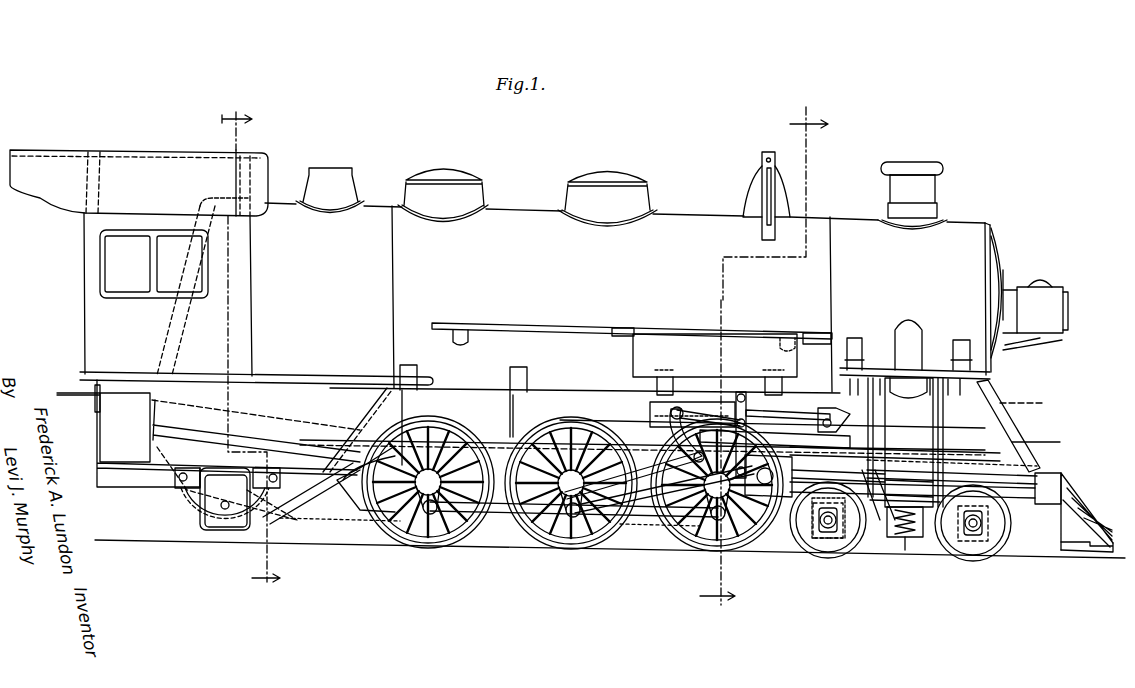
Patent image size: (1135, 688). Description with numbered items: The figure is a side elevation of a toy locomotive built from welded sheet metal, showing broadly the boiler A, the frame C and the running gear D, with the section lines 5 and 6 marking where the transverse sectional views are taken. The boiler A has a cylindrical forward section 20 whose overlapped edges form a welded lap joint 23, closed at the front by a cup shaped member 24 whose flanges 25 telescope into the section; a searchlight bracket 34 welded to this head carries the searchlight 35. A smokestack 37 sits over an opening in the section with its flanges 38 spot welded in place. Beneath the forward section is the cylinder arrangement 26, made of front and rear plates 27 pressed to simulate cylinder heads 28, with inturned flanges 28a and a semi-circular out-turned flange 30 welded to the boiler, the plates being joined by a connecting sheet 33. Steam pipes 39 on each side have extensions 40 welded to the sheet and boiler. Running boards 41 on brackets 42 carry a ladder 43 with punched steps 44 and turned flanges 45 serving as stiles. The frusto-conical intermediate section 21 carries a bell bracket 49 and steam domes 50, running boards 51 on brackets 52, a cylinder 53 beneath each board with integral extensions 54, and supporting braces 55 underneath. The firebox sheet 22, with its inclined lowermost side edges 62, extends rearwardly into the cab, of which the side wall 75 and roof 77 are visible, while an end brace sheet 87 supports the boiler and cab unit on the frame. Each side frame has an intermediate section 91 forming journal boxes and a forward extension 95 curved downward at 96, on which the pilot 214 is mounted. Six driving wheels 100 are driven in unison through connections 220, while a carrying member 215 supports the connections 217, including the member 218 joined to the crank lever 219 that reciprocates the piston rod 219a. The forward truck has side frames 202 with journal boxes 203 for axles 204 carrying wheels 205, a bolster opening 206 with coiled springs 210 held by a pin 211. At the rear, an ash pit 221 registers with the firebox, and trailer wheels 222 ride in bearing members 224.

The forward section 20 is at (966, 232).
The intermediate section 21 is at (688, 225).
The firebox sheet 22 is at (368, 218).
The welded lap joint 23 is at (160, 170).
The cup shaped member 24 is at (1004, 272).
The flanges 25 is at (993, 242).
The cylinder arrangement 26 is at (830, 412).
The front and rear plates 27 is at (870, 438).
The cylinder heads 28 is at (840, 408).
The inturned flanges 28a is at (898, 542).
The out-turned flange 30 is at (835, 378).
The connecting sheet 33 is at (909, 450).
The searchlight bracket 34 is at (1045, 344).
The searchlight 35 is at (1046, 298).
The smokestack 37 is at (893, 176).
The flanges 38 is at (888, 212).
The steam pipes 39 is at (912, 340).
The extensions 40 is at (910, 330).
The running boards 41 is at (873, 360).
The brackets 42 is at (855, 345).
The ladder 43 is at (1000, 428).
The steps 44 is at (1034, 403).
The turned flanges 45 is at (1048, 442).
The bell bracket 49 is at (769, 152).
The steam domes 50 is at (603, 178).
The running boards 51 is at (560, 326).
The brackets 52 is at (468, 340).
The cylinder 53 is at (712, 348).
The integral extensions 54 is at (628, 328).
The supporting braces 55 is at (520, 400).
The inclined lowermost side edges 62 is at (222, 425).
The side wall 75 is at (98, 318).
The roof 77 is at (208, 160).
The end brace sheet 87 is at (97, 443).
The intermediate section 91 is at (640, 450).
The forward extension 95 is at (909, 466).
The down-turned portion 96 is at (1020, 490).
The driving wheels 100 is at (428, 530).
The side frames 202 is at (905, 545).
The journal boxes 203 is at (830, 560).
The axles 204 is at (820, 528).
The wheels 205 is at (795, 525).
The bolster opening 206 is at (912, 540).
The coiled springs 210 is at (891, 495).
The pin 211 is at (907, 495).
The pilot 214 is at (1085, 522).
The carrying member 215 is at (692, 398).
The connections 217 is at (650, 500).
The member 218 is at (783, 435).
The crank lever 219 is at (775, 437).
The piston rod 219a is at (835, 517).
The connections 220 is at (560, 530).
The ash pit 221 is at (272, 498).
The trailer wheels 222 is at (198, 520).
The bearing members 224 is at (262, 530).
The section line 5— 5 is at (771, 357).
The section line 6— 6 is at (258, 349).
The boiler A is at (510, 218).
The frame C is at (348, 512).
The running gear D is at (520, 515).